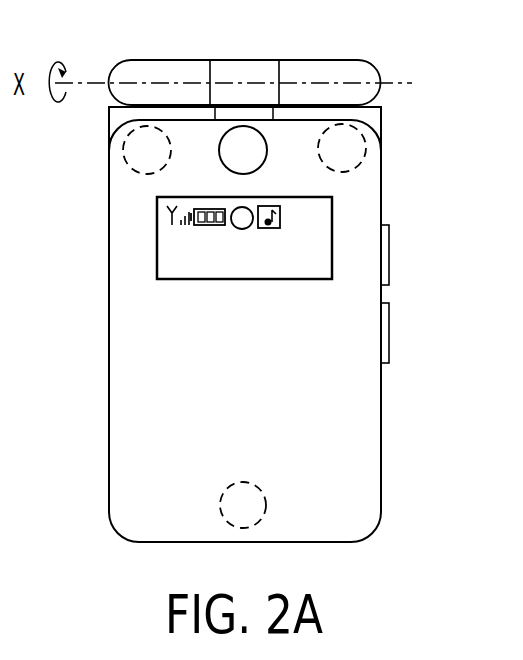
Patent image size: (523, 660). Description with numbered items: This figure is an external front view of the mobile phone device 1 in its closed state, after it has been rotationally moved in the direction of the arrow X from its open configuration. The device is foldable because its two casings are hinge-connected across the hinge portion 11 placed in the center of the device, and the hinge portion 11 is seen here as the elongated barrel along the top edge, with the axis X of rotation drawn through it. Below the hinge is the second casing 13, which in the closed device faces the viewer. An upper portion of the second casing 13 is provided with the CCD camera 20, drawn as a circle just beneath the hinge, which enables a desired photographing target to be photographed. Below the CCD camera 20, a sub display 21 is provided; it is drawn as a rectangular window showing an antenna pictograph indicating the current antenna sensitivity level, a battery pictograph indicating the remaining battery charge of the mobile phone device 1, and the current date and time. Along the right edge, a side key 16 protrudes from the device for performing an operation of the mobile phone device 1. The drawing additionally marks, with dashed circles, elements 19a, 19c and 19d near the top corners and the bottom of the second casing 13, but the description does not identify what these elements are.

The mobile phone device 1 is at (407, 433).
The hinge portion 11 is at (378, 65).
The second casing 13 is at (109, 270).
The side key 16 is at (389, 255).
The microphone 19a is at (220, 502).
The speaker 19c is at (364, 155).
The speaker 19d is at (123, 160).
The CCD camera 20 is at (243, 126).
The sub display 21 is at (157, 238).